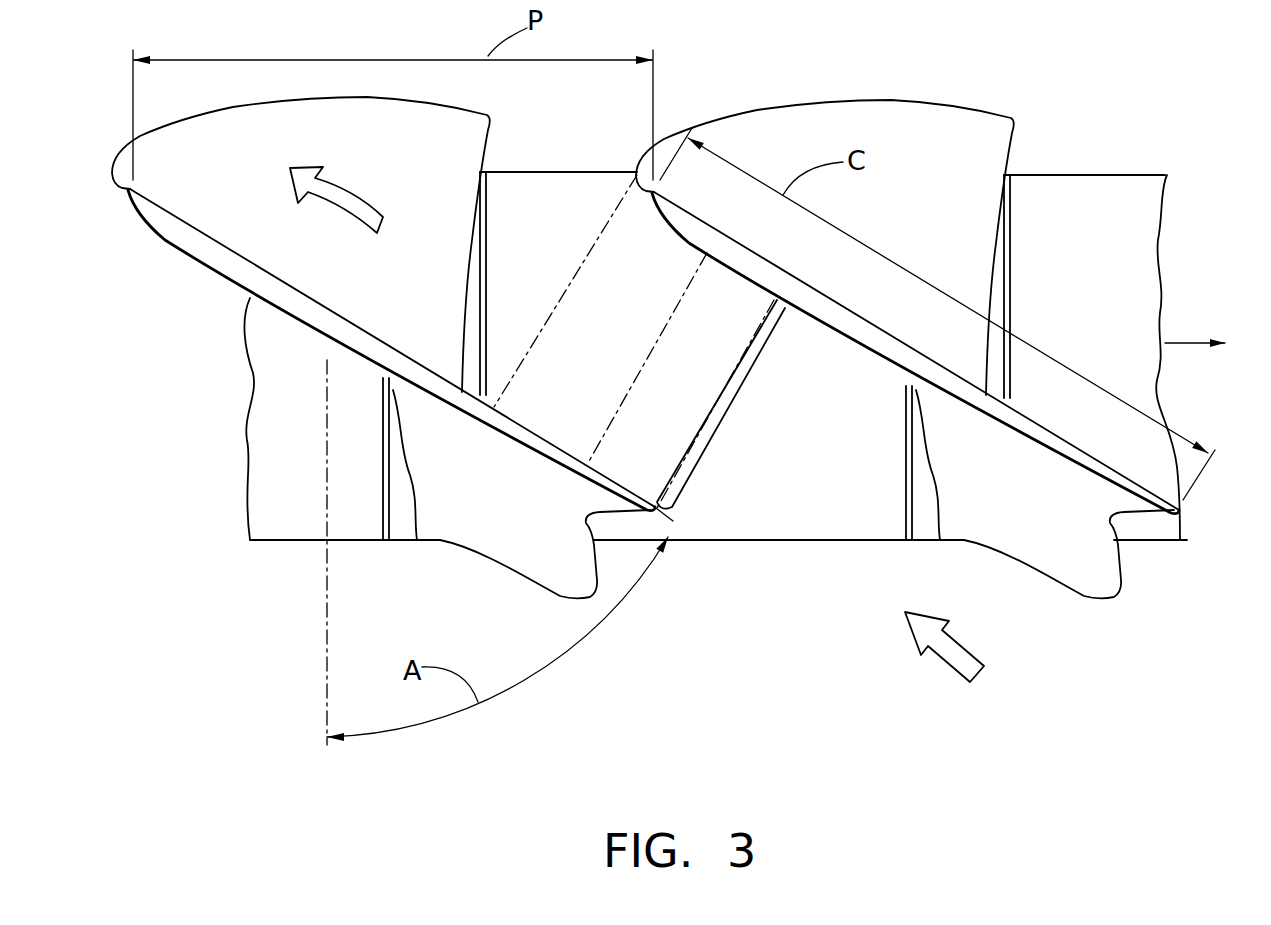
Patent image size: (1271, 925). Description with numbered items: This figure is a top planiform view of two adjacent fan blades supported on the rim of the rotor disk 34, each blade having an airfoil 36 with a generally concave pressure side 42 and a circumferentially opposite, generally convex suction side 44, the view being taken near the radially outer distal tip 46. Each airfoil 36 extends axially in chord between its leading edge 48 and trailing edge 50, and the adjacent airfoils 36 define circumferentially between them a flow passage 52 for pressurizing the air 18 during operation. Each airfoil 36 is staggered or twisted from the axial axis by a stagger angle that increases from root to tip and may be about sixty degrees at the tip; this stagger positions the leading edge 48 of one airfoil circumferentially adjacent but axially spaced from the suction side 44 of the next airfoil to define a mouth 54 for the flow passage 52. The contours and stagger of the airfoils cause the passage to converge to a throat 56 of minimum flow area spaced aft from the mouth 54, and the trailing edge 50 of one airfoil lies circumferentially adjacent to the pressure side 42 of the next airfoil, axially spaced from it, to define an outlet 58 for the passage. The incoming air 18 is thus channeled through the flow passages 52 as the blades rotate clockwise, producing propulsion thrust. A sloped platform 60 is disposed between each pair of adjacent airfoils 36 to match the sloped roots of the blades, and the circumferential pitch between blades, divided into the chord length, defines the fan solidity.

The air 18 is at (962, 652).
The rotor disk 34 is at (1165, 245).
The airfoil 36 is at (157, 243).
The pressure side 42 is at (945, 226).
The suction side 44 is at (1042, 517).
The tip 46 is at (238, 276).
The leading edge 48 is at (1083, 600).
The trailing edge 50 is at (817, 100).
The flow passage 52 is at (733, 410).
The mouth 54 is at (757, 327).
The throat 56 is at (630, 383).
The outlet 58 is at (548, 295).
The platform 60 is at (485, 213).